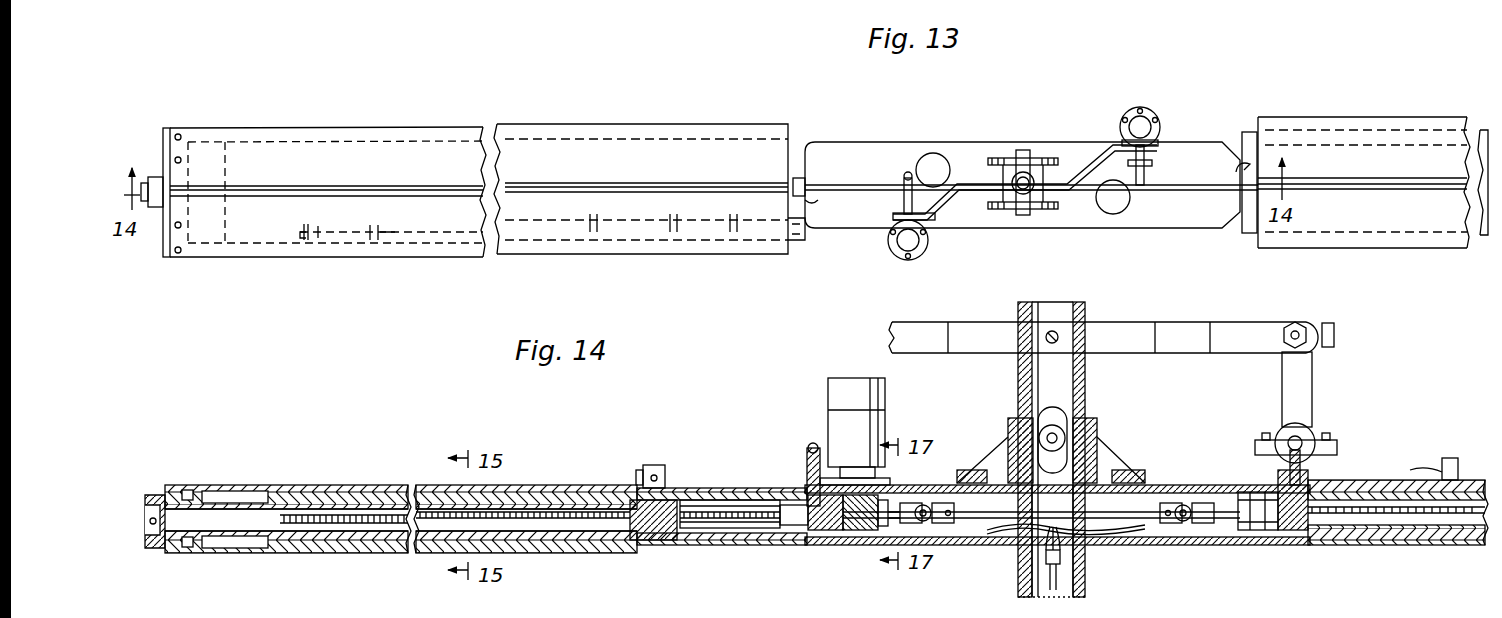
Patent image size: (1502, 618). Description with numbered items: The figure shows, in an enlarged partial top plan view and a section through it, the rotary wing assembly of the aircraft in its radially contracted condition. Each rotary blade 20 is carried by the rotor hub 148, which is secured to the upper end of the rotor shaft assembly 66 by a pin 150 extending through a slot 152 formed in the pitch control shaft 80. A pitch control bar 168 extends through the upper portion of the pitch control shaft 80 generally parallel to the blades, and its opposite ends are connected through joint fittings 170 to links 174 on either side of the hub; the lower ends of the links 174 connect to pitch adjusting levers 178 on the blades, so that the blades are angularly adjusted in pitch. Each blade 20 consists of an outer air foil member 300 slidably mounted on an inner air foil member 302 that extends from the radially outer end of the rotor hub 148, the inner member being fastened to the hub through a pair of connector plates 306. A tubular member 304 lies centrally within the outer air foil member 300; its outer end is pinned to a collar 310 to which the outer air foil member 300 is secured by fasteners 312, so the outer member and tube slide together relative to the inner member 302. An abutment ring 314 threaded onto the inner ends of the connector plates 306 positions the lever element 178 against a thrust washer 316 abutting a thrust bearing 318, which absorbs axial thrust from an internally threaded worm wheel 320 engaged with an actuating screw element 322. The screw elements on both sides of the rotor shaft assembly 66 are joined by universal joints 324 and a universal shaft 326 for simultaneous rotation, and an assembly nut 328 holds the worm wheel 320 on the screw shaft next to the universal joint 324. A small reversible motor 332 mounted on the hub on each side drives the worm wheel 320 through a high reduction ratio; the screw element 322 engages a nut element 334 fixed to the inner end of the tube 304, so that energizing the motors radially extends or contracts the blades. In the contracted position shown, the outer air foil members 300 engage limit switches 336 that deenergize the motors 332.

In FIG. 13, the rotary blade 20 is at (528, 124).
In FIG. 14, the rotary blade 20 is at (537, 482).
In FIG. 14, the rotor shaft assembly 66 is at (1086, 580).
In FIG. 14, the pitch control shaft 80 is at (1086, 386).
In FIG. 13, the rotor hub 148 is at (1196, 146).
In FIG. 14, the rotor hub 148 is at (1172, 545).
In FIG. 14, the pin 150 is at (1065, 430).
In FIG. 14, the slot 152 is at (1040, 450).
In FIG. 13, the pitch control bar 168 is at (1068, 184).
In FIG. 14, the pitch control bar 168 is at (1128, 322).
In FIG. 13, the flange bearing 170 is at (1142, 124).
In FIG. 14, the flange bearing 170 is at (1300, 320).
In FIG. 13, the link 174 is at (905, 200).
In FIG. 14, the link 174 is at (1300, 385).
In FIG. 14, the pitch adjusting lever 178 is at (810, 450).
In FIG. 13, the outer air foil member 300 is at (706, 150).
In FIG. 14, the outer air foil member 300 is at (356, 483).
In FIG. 13, the inner air foil member 302 is at (800, 240).
In FIG. 14, the inner air foil member 302 is at (590, 483).
In FIG. 14, the tubular member 304 is at (255, 500).
In FIG. 14, the connector plate 306 is at (700, 498).
In FIG. 13, the collar 310 is at (167, 255).
In FIG. 14, the collar 310 is at (163, 490).
In FIG. 13, the fastener 312 is at (180, 134).
In FIG. 14, the fastener 312 is at (188, 486).
In FIG. 14, the abutment ring 314 is at (793, 532).
In FIG. 14, the thrust washer 316 is at (830, 535).
In FIG. 14, the thrust bearing 318 is at (828, 480).
In FIG. 14, the worm wheel 320 is at (858, 540).
In FIG. 14, the actuating screw element 322 is at (706, 530).
In FIG. 14, the universal joint 324 is at (925, 522).
In FIG. 14, the universal shaft 326 is at (1105, 545).
In FIG. 14, the assembly nut 328 is at (1238, 540).
In FIG. 13, the reversible motor 332 is at (938, 160).
In FIG. 14, the reversible motor 332 is at (868, 426).
In FIG. 14, the nut element 334 is at (660, 540).
In FIG. 13, the limit switch 336 is at (801, 183).
In FIG. 14, the limit switch 336 is at (655, 466).